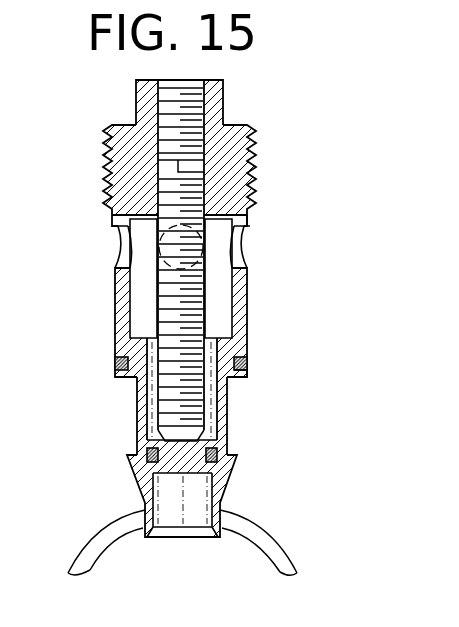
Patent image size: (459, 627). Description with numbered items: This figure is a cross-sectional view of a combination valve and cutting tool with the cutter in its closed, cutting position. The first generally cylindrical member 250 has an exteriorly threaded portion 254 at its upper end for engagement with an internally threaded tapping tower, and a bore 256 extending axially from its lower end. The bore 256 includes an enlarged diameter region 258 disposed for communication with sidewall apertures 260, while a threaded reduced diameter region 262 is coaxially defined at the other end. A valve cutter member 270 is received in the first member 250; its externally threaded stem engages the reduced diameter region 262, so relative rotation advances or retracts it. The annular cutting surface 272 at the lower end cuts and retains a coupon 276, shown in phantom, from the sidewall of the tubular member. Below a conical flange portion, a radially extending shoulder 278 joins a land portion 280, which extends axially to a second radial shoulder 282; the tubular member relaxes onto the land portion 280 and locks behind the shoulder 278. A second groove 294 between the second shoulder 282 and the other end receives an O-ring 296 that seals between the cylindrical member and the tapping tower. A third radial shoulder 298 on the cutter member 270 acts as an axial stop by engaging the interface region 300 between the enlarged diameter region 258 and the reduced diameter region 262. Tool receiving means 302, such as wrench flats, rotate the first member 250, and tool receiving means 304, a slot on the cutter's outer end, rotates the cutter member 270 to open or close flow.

The first generally cylindrical member 250 is at (258, 311).
The exteriorly threaded portion 254 is at (255, 158).
The bore 256 is at (148, 417).
The enlarged diameter region 258 is at (135, 302).
The sidewall apertures 260 is at (120, 265).
The reduced diameter region 262 is at (165, 102).
The valve cutter member 270 is at (148, 183).
The annular cutting surface 272 is at (218, 537).
The coupon 276 is at (182, 532).
The radially extending shoulder 278 is at (222, 455).
The land portion 280 is at (145, 447).
The second radial shoulder 282 is at (122, 382).
The second groove 294 is at (245, 350).
The O-ring 296 is at (245, 362).
The third radial shoulder 298 is at (213, 437).
The interface region 300 is at (245, 235).
The tool receiving means 302 is at (223, 100).
The tool receiving means 304 is at (180, 162).